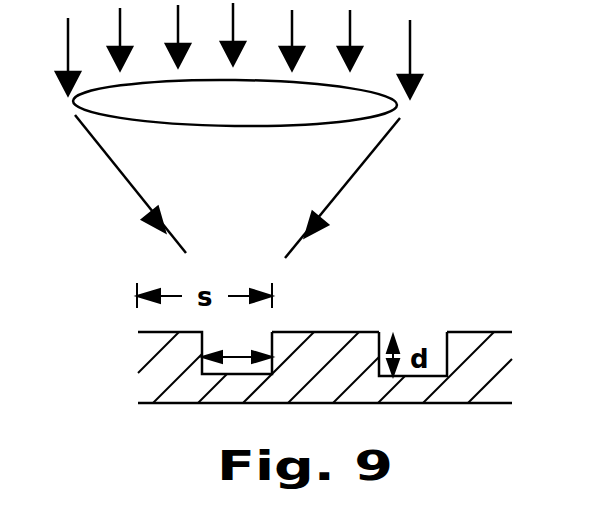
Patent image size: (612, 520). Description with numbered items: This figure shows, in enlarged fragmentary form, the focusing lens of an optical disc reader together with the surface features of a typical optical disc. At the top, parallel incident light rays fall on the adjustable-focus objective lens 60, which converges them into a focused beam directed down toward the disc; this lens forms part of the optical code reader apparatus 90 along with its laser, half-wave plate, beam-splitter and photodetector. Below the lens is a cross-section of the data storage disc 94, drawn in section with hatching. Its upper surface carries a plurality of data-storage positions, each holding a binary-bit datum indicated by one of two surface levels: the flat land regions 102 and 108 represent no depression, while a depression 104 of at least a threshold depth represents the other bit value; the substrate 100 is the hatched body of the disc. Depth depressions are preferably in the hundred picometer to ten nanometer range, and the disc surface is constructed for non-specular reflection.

The adjustable-focus objective lens 60 is at (257, 128).
The optical code reader apparatus 90 is at (370, 225).
The substrate 100 is at (183, 387).
The land surface 102 is at (300, 332).
The groove 104 is at (415, 340).
The land surface 108 is at (493, 338).
The data storage disc 94 is at (442, 410).